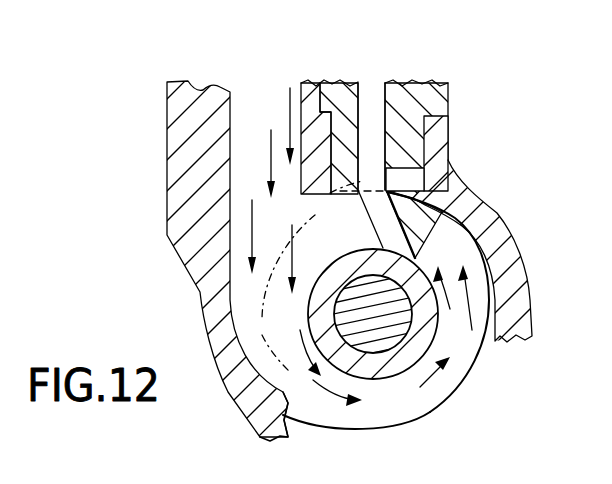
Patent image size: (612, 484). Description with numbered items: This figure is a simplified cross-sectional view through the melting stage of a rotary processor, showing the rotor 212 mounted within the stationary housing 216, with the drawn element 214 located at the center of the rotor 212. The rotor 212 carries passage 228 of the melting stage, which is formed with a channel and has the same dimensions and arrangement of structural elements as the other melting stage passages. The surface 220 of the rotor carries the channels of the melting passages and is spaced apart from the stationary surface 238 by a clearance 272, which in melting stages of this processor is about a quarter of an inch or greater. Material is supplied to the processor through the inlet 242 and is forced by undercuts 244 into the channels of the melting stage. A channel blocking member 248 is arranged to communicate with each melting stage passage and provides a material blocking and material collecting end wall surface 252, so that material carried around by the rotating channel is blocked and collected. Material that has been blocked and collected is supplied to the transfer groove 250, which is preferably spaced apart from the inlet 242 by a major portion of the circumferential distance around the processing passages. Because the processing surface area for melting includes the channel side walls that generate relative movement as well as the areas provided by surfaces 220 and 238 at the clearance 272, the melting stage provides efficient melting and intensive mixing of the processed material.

The rotor 212 is at (380, 358).
The core shaft 214 is at (385, 352).
The housing 216 is at (259, 427).
The surface 220 is at (490, 342).
The passage 228 is at (455, 399).
The surface 238 is at (484, 278).
The inlet 242 is at (167, 185).
The undercuts 244 is at (238, 212).
The channel blocking member 248 is at (372, 93).
The transfer groove 250 is at (404, 167).
The end wall surface 252 is at (403, 223).
The clearance 272 is at (258, 387).